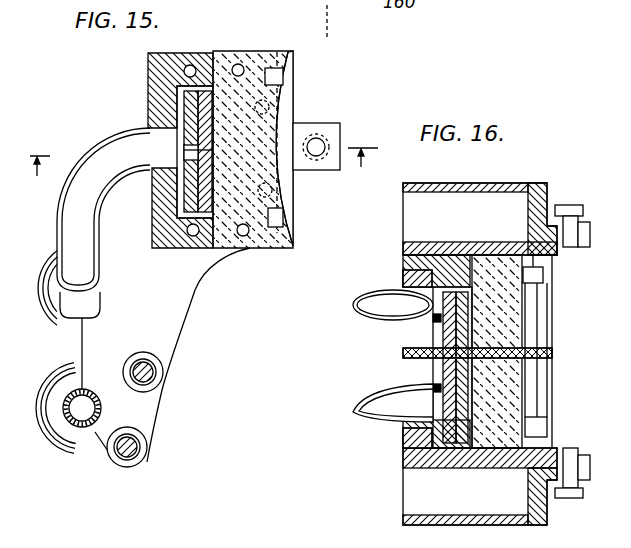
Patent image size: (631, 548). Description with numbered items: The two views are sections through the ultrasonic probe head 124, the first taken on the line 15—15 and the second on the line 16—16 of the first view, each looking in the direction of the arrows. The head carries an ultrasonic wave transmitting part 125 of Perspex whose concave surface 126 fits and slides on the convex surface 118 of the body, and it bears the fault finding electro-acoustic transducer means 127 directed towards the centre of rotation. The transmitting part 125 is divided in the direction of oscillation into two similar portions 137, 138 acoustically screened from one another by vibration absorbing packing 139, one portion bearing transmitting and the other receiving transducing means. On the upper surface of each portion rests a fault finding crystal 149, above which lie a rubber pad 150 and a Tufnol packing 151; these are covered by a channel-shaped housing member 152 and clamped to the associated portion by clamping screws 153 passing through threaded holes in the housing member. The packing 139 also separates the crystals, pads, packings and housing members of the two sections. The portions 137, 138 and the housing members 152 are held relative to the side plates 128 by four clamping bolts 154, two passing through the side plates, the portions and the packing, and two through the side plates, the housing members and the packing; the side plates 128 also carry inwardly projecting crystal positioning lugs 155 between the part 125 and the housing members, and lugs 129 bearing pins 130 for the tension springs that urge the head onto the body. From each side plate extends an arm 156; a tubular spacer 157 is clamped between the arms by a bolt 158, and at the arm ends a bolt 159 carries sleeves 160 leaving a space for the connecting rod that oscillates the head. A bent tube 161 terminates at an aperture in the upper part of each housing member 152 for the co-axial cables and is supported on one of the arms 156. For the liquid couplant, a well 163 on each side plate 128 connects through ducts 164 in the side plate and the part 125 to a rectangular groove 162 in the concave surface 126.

In FIG. 15, the section line 15— 15 is at (330, 28).
In FIG. 15, the section line 16— 16 is at (202, 174).
In FIG. 16, the convex surface 118 is at (430, 447).
In FIG. 15, the probe head 124 is at (207, 58).
In FIG. 16, the probe head 124 is at (418, 262).
In FIG. 15, the ultrasonic wave transmitting part 125 is at (276, 66).
In FIG. 16, the ultrasonic wave transmitting part 125 is at (523, 304).
In FIG. 15, the concave surface 126 is at (272, 120).
In FIG. 16, the concave surface 126 is at (532, 377).
In FIG. 15, the fault finding electro-acoustic transducer means 127 is at (147, 64).
In FIG. 16, the fault finding electro-acoustic transducer means 127 is at (405, 268).
In FIG. 16, the side plates 128 is at (498, 247).
In FIG. 15, the lugs 129 is at (332, 131).
In FIG. 16, the lugs 129 is at (589, 465).
In FIG. 16, the pins 130 is at (572, 489).
In FIG. 16, the portion 137 is at (512, 328).
In FIG. 15, the portion 138 is at (258, 163).
In FIG. 16, the portion 138 is at (520, 405).
In FIG. 16, the vibration absorbing packing 139 is at (538, 352).
In FIG. 15, the fault finding crystal 149 is at (190, 97).
In FIG. 16, the fault finding crystal 149 is at (427, 372).
In FIG. 15, the rubber pad 150 is at (205, 118).
In FIG. 16, the rubber pad 150 is at (467, 380).
In FIG. 15, the Tufnol packing 151 is at (150, 130).
In FIG. 16, the Tufnol packing 151 is at (468, 440).
In FIG. 15, the channel-shaped housing member 152 is at (160, 204).
In FIG. 16, the channel-shaped housing member 152 is at (414, 441).
In FIG. 16, the clamping screws 153 is at (358, 304).
In FIG. 15, the clamping bolts 154 is at (197, 236).
In FIG. 16, the crystal positioning lugs 155 is at (437, 449).
In FIG. 15, the arm 156 is at (87, 358).
In FIG. 15, the tubular spacer 157 is at (163, 379).
In FIG. 15, the bolt 158 is at (163, 366).
In FIG. 15, the bolt 159 is at (148, 447).
In FIG. 15, the sleeves 160 is at (140, 456).
In FIG. 15, the tube 161 is at (76, 417).
In FIG. 16, the tube 161 is at (362, 418).
In FIG. 15, the groove 162 is at (284, 76).
In FIG. 16, the groove 162 is at (533, 279).
In FIG. 16, the well 163 is at (432, 500).
In FIG. 15, the ducts 164 is at (283, 206).
In FIG. 16, the ducts 164 is at (528, 445).